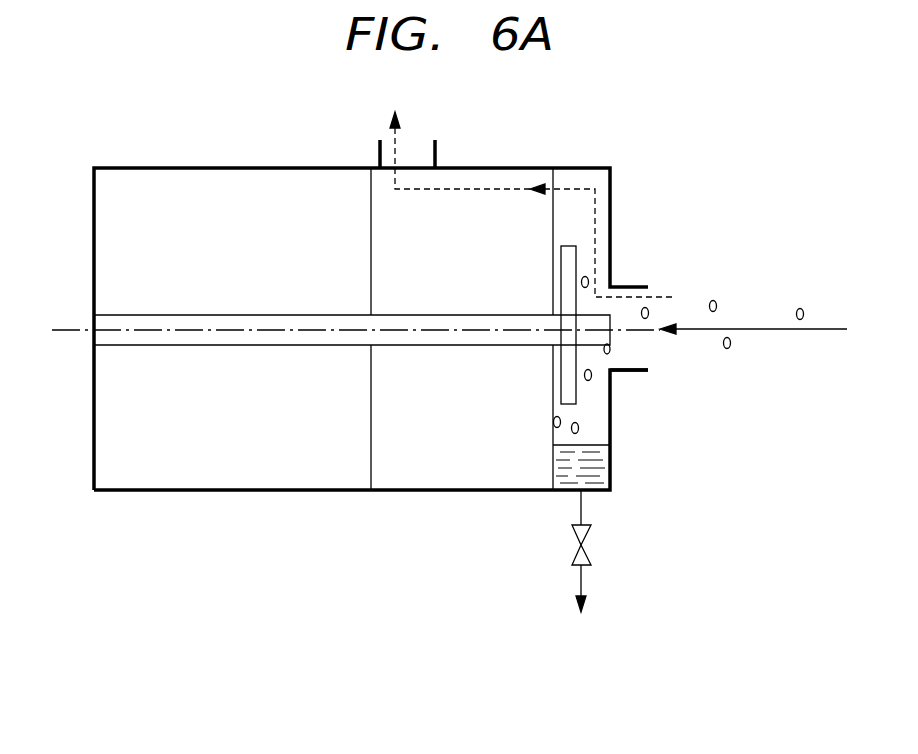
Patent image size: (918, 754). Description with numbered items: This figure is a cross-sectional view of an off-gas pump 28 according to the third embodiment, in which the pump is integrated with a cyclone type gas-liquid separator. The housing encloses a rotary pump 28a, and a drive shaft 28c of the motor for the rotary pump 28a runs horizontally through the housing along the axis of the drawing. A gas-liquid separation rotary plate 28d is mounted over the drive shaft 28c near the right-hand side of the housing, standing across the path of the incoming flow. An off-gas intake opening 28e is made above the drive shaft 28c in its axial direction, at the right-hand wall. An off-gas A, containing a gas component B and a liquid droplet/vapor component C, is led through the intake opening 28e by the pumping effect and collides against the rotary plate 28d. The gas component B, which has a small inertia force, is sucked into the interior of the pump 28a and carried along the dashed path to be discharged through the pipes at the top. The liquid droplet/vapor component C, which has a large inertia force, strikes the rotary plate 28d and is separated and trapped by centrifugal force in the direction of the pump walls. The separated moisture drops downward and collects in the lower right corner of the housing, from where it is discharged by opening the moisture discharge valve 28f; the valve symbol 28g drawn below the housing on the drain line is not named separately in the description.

The off-gas pump 28 is at (234, 158).
The rotary pump 28a is at (432, 491).
The drive shaft 28c is at (162, 492).
The gas-liquid separation rotary plate 28d is at (577, 258).
The off-gas intake opening 28e is at (628, 372).
The moisture discharge valve 28f is at (378, 150).
The drain valve 28g is at (591, 545).
The off-gas A is at (748, 327).
The gas component B is at (484, 185).
The liquid droplet/vapor component C is at (727, 356).